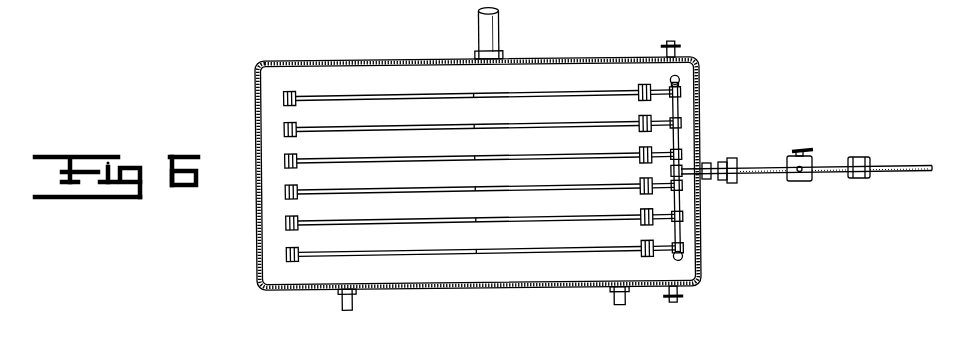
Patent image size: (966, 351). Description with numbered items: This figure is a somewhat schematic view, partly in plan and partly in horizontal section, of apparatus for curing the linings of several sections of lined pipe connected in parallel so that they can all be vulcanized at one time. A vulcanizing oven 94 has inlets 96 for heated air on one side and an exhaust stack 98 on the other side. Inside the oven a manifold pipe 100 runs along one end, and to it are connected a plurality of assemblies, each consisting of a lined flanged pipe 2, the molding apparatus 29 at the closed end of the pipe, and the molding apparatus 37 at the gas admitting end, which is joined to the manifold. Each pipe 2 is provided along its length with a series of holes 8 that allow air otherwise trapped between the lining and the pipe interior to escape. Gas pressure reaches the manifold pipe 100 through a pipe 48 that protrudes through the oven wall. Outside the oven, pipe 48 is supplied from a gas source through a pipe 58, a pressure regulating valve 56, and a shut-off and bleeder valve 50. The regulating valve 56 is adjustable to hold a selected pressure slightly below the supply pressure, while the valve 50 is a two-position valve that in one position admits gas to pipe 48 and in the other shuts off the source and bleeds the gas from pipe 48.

The pipe 2 is at (527, 93).
The holes 8 is at (475, 128).
The molding apparatus 29 is at (285, 106).
The molding apparatus 37 is at (644, 121).
The pipe 48 is at (713, 176).
The shut-off and bleeder valve 50 is at (797, 182).
The pressure regulating valve 56 is at (860, 179).
The pipe 58 is at (918, 172).
The vulcanizing oven 94 is at (350, 61).
The inlets 96 is at (342, 307).
The exhaust stack 98 is at (501, 28).
The manifold pipe 100 is at (681, 142).